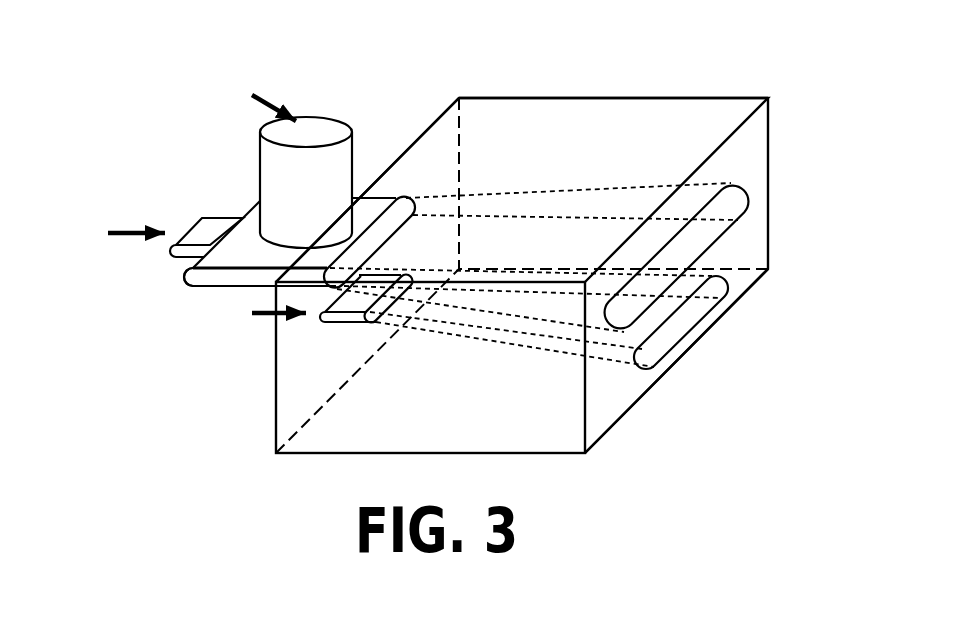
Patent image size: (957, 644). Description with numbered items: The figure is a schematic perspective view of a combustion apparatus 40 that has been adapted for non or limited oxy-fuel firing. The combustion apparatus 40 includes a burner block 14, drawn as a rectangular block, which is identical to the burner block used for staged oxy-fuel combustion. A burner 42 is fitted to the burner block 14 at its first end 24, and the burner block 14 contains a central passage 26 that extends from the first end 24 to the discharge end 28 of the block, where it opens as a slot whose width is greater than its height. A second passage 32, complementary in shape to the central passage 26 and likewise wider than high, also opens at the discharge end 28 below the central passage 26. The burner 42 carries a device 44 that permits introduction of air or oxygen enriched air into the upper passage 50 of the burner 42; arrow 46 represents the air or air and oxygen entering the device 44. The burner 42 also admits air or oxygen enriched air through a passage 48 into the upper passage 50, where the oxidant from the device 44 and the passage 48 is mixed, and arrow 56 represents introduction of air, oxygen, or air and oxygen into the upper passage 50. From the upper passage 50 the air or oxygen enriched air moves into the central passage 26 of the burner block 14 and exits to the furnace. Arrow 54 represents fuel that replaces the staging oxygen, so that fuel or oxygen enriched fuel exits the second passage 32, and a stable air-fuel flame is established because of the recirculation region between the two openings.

The burner block 14 is at (515, 94).
The first end 24 is at (446, 113).
The central passage 26 is at (746, 198).
The discharge end 28 is at (602, 412).
The second passage 32 is at (696, 318).
The combustion apparatus 40 is at (655, 83).
The burner 42 is at (256, 201).
The device 44 is at (353, 146).
The arrow 46 is at (277, 110).
The passage 48 is at (176, 258).
The upper passage 50 is at (193, 287).
The arrow 54 is at (257, 317).
The arrow 56 is at (130, 232).